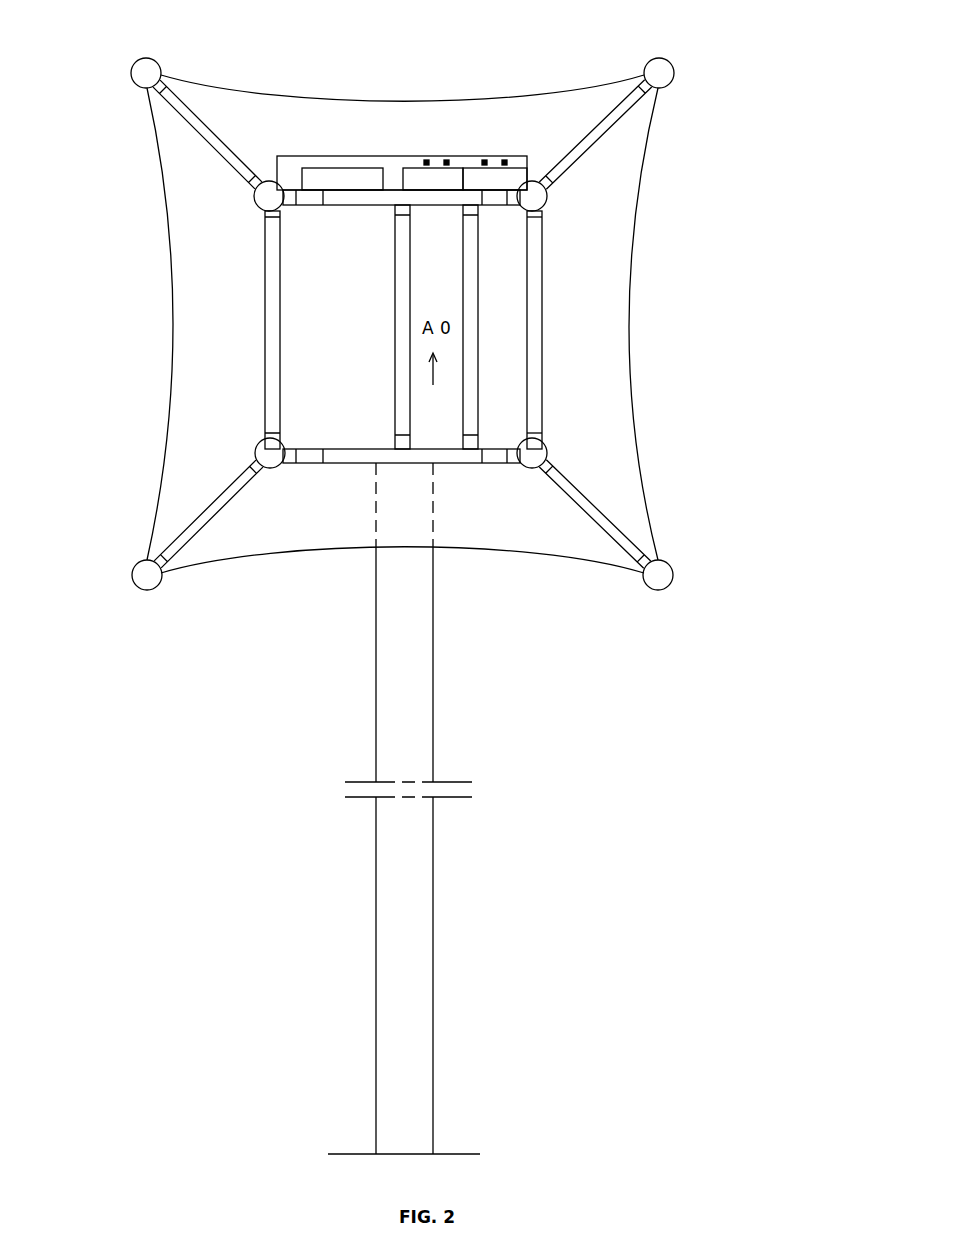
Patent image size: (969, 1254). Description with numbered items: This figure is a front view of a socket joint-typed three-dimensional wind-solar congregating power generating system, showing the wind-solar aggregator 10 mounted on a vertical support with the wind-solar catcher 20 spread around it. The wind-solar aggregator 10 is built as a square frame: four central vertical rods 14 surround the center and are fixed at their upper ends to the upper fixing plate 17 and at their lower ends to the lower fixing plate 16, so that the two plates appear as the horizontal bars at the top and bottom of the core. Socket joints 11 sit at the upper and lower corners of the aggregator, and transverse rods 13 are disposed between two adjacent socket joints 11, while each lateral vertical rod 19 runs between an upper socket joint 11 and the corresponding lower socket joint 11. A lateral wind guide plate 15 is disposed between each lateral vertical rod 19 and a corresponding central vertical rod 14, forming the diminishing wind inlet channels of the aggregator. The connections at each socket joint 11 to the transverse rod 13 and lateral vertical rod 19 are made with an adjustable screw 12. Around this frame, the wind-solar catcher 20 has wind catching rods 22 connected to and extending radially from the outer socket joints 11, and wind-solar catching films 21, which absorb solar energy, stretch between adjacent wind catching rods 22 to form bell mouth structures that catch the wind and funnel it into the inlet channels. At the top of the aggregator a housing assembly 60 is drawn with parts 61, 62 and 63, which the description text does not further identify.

The wind-solar aggregator 10 is at (757, 225).
The socket joint 11 is at (140, 58).
The adjustable screw 12 is at (547, 212).
The transverse rod 13 is at (498, 195).
The central vertical rod 14 is at (472, 257).
The lateral wind guide plate 15 is at (370, 270).
The lower fixing plate 16 is at (380, 455).
The upper fixing plate 17 is at (387, 197).
The lateral vertical rod 19 is at (532, 325).
The wind-solar catcher 20 is at (722, 432).
The wind-solar catching film 21 is at (317, 97).
The wind catching rod 22 is at (187, 112).
The generator housing 60 is at (757, 124).
The housing cover 61 is at (328, 155).
The housing compartment 62 is at (322, 178).
The housing compartment with fasteners 63 is at (495, 178).